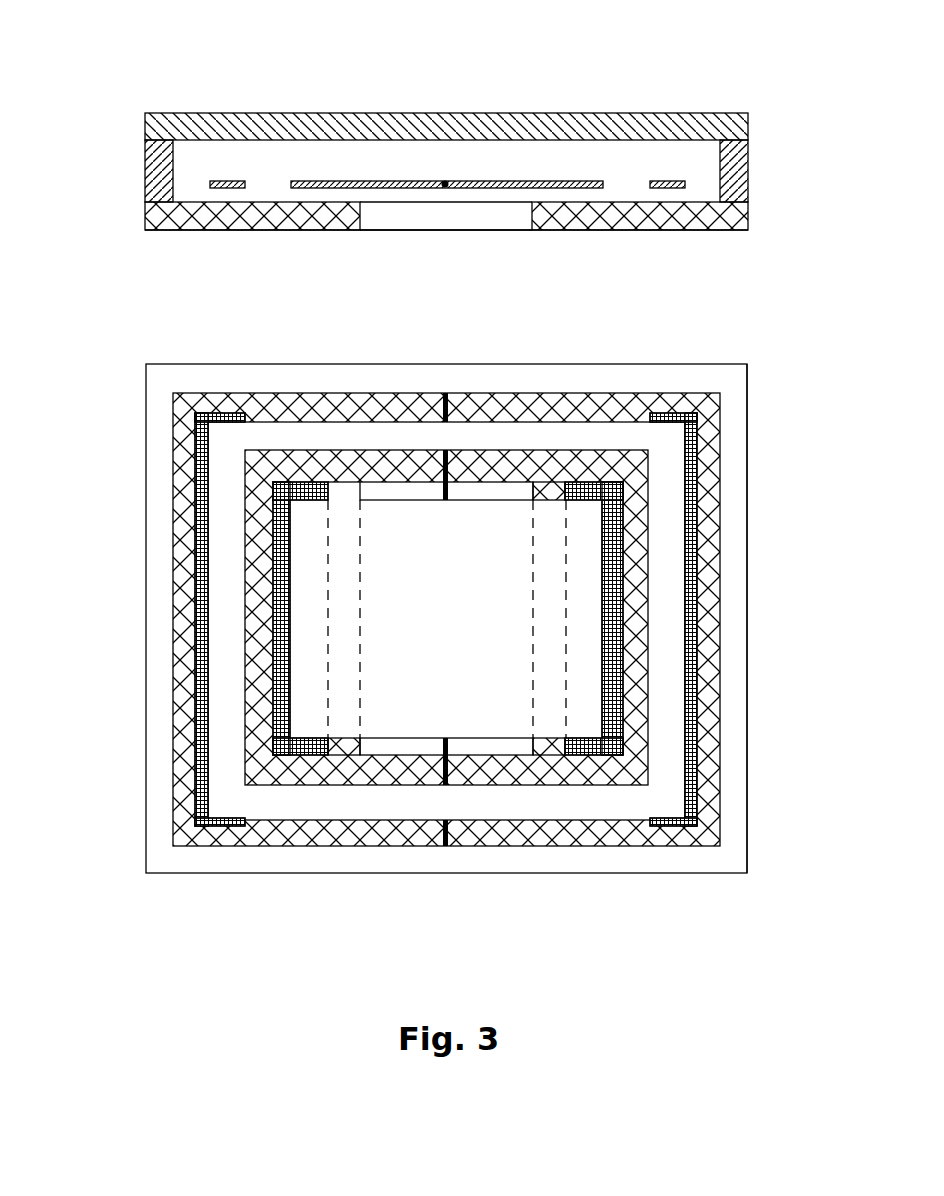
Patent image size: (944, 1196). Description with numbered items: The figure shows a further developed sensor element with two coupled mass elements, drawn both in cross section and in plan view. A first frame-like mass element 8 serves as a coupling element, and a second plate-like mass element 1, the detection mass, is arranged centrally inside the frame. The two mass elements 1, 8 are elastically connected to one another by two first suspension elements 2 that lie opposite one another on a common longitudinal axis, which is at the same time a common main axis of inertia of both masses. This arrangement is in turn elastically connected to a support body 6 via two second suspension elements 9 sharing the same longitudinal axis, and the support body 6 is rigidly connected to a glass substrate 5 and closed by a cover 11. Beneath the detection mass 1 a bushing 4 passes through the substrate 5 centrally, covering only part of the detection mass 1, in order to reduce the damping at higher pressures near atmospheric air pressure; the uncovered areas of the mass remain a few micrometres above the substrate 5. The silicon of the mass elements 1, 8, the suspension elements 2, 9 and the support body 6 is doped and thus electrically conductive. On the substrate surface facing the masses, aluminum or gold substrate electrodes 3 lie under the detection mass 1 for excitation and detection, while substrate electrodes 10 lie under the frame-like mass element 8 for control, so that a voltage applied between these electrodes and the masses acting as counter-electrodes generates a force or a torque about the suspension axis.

The detection mass 1 is at (283, 183).
The first suspension elements 2 is at (445, 184).
The substrate electrodes 3 is at (300, 208).
The bushing 4 is at (563, 202).
The substrate 5 is at (748, 217).
The support body 6 is at (145, 171).
The frame-like mass element 8 is at (228, 181).
The second suspension elements 9 is at (453, 407).
The substrate electrodes 10 is at (738, 188).
The cover 11 is at (443, 113).